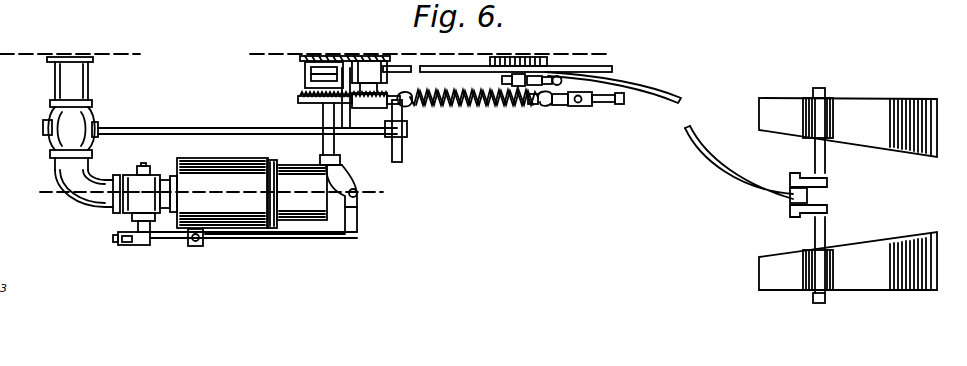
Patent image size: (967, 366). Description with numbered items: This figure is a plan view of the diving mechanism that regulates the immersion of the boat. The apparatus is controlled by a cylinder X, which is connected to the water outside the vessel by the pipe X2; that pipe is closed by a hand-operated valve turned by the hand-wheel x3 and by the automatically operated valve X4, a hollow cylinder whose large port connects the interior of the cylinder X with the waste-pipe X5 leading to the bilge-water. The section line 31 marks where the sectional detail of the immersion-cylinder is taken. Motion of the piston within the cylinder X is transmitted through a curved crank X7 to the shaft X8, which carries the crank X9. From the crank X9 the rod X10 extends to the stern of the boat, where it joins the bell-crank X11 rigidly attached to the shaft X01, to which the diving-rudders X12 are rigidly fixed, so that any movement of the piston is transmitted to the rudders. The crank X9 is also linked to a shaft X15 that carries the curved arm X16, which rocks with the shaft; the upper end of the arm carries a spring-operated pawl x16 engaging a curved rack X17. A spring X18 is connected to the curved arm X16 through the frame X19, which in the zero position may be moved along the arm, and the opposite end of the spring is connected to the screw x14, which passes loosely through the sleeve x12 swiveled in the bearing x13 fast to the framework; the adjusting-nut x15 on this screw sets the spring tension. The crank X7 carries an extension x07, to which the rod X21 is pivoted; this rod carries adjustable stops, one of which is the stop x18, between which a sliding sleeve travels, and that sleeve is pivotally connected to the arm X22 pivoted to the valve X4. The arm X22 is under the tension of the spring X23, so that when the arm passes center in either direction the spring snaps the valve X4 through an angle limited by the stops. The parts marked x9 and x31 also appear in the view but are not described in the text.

The cylinder X is at (243, 193).
The pipe X2 is at (77, 93).
The shaft X8 is at (96, 123).
The section line 31 is at (207, 190).
The valve X4 is at (143, 182).
The arm X22 is at (130, 232).
The adjustable stop x18 is at (128, 243).
The curved rack X17 is at (200, 246).
The rod X21 is at (275, 238).
The pipe coupling x9 is at (147, 243).
The crank X7 is at (357, 203).
The extension x07 is at (355, 227).
The screw x14 is at (302, 96).
The crank X9 is at (305, 59).
The adjusting-nut x15 is at (340, 72).
The bearing x13 is at (368, 61).
The sleeve x12 is at (365, 100).
The hand-wheel x3 is at (403, 145).
The rod X10 is at (433, 67).
The shaft X15 is at (523, 60).
The spring X18 is at (474, 101).
The spring-operated pawl x16 is at (566, 104).
The curved arm X16 is at (531, 104).
The frame X19 is at (594, 104).
The cable x31 is at (620, 77).
The diving-rudders X12 is at (872, 108).
The shaft X01 is at (826, 162).
The bell-crank X11 is at (800, 209).
The spring X23 is at (125, 0).
The waste-pipe X5 is at (168, 0).